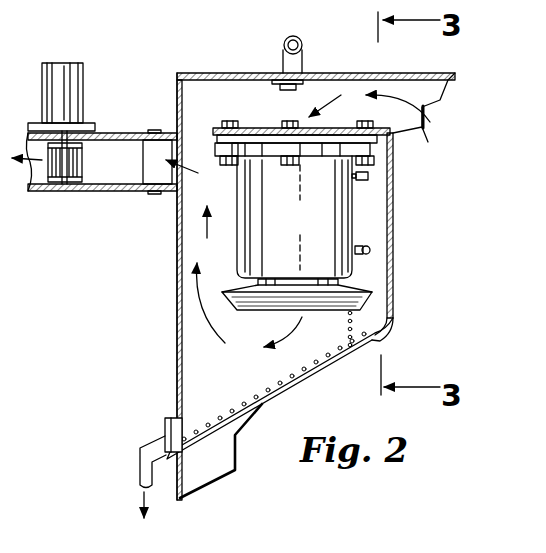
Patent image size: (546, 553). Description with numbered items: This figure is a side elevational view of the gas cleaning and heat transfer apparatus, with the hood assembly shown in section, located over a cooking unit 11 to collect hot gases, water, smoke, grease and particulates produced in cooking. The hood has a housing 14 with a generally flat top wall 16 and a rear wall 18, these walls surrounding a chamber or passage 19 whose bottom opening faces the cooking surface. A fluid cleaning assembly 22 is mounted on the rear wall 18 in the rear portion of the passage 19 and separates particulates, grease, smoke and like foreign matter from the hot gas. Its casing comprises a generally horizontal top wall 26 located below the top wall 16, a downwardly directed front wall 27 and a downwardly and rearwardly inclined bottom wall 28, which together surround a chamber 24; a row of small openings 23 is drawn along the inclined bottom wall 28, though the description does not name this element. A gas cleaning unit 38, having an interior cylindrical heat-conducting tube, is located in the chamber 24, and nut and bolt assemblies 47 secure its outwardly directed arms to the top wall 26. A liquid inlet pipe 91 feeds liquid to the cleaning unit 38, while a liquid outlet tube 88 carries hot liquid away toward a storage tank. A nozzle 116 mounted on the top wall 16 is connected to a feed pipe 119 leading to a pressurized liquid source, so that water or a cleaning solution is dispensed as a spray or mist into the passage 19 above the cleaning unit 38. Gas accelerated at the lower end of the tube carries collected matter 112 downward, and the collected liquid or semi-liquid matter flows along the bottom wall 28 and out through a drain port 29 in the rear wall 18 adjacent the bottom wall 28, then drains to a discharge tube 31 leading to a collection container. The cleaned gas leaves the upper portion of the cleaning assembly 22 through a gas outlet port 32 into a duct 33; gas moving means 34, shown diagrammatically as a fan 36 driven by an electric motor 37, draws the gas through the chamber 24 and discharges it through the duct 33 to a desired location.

The cooking unit 11 is at (6, 308).
The housing 14 is at (336, 72).
The top wall 16 is at (394, 73).
The rear wall 18 is at (177, 232).
The passage 19 is at (215, 92).
The fluid cleaning assembly 22 is at (316, 315).
The holes 23 is at (331, 366).
The chamber 24 is at (157, 252).
The top wall 26 is at (257, 128).
The front wall 27 is at (393, 240).
The bottom wall 28 is at (281, 394).
The drain port 29 is at (183, 430).
The discharge tube 31 is at (140, 458).
The gas outlet port 32 is at (148, 163).
The duct 33 is at (130, 140).
The gas moving means 34 is at (64, 144).
The fan 36 is at (55, 183).
The electric motor 37 is at (83, 95).
The gas cleaning unit 38 is at (297, 233).
The nut and bolt assemblies 47 is at (374, 158).
The liquid outlet tube 88 is at (369, 181).
The liquid inlet pipe 91 is at (370, 251).
The collected matter 112 is at (346, 326).
The nozzle 116 is at (365, 106).
The feed pipe 119 is at (283, 43).